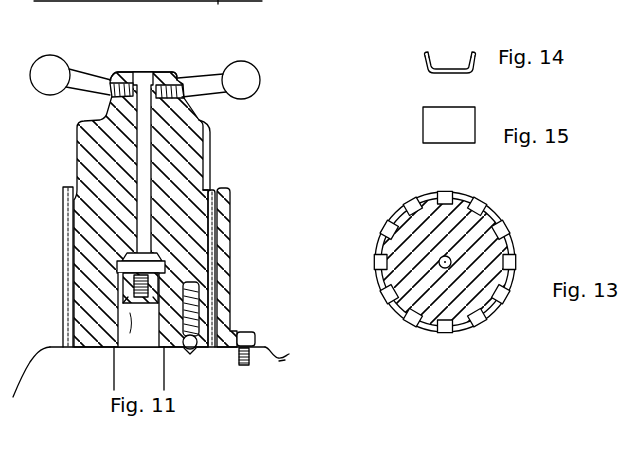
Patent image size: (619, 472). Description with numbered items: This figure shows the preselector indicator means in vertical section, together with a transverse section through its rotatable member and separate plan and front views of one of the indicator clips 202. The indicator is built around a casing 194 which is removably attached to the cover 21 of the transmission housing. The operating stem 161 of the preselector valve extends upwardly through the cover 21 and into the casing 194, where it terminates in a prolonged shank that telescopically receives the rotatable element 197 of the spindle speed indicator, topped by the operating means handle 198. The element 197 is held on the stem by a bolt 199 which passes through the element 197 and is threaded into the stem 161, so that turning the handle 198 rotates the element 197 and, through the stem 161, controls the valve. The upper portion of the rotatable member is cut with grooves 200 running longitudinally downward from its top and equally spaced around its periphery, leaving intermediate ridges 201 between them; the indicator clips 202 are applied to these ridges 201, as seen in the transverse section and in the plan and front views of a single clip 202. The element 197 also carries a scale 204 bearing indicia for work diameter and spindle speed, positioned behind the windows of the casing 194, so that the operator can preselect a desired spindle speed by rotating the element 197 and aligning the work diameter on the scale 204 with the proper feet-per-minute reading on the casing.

In FIG. 11, the cover 21 is at (289, 354).
In FIG. 11, the operating stem 161 is at (160, 374).
In FIG. 11, the casing 194 is at (227, 286).
In FIG. 11, the rotatable element 197 is at (190, 182).
In FIG. 11, the operating means handle 198 is at (195, 87).
In FIG. 11, the bolt 199 is at (143, 147).
In FIG. 11, the grooves 200 is at (206, 152).
In FIG. 11, the intermediate ridges 201 is at (213, 136).
In FIG. 13, the intermediate ridges 201 is at (497, 211).
In FIG. 14, the indicator clips 202 is at (444, 73).
In FIG. 15, the indicator clips 202 is at (430, 108).
In FIG. 13, the indicator clips 202 is at (507, 228).
In FIG. 11, the scale 204 is at (209, 216).